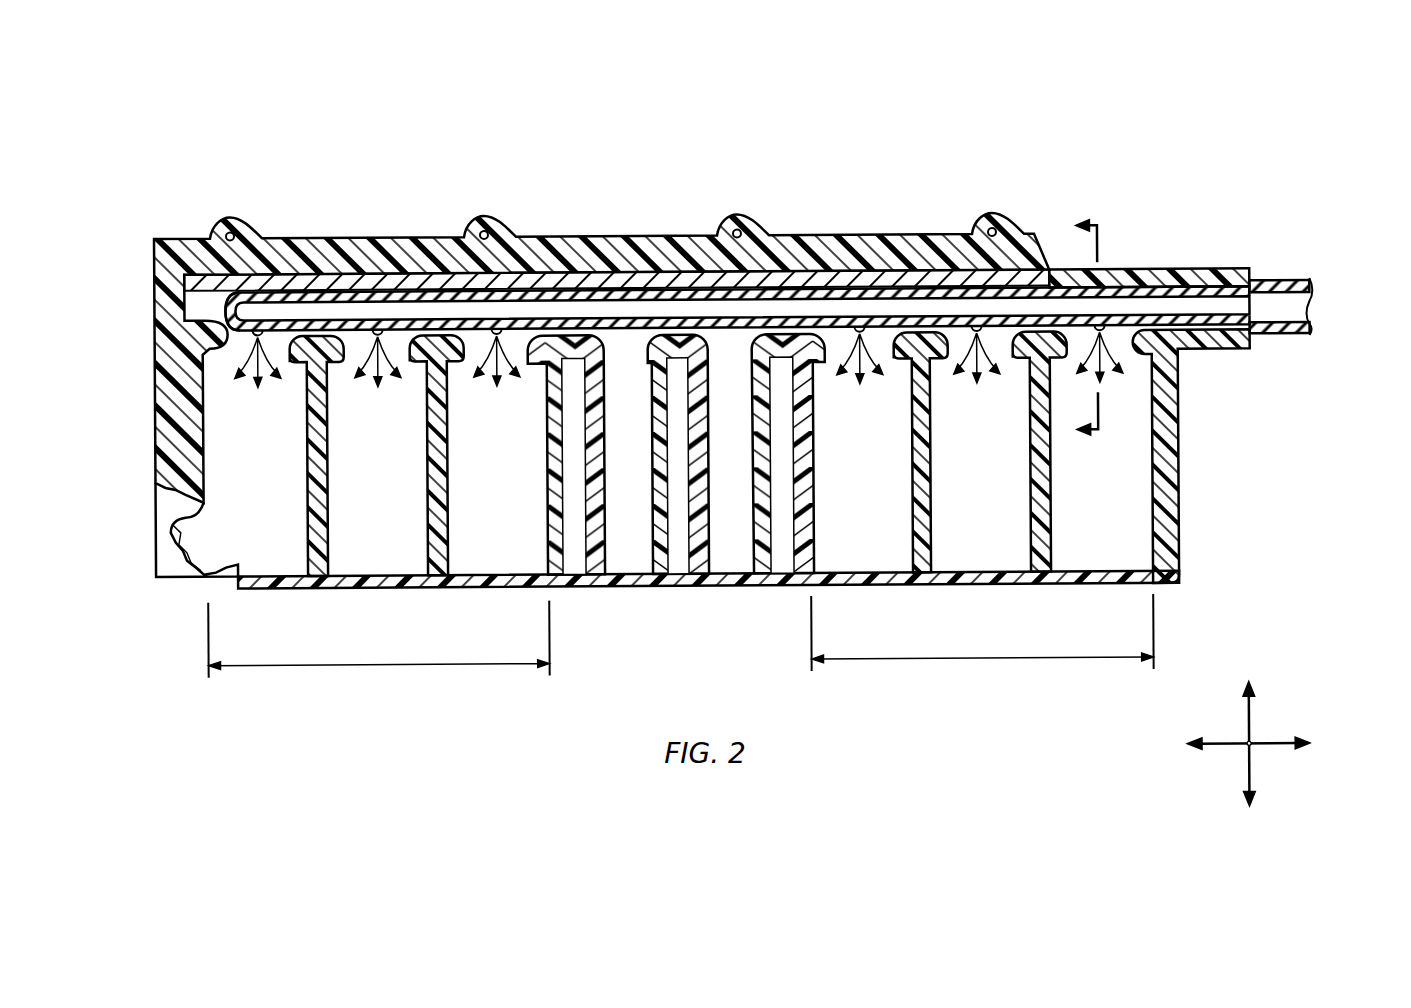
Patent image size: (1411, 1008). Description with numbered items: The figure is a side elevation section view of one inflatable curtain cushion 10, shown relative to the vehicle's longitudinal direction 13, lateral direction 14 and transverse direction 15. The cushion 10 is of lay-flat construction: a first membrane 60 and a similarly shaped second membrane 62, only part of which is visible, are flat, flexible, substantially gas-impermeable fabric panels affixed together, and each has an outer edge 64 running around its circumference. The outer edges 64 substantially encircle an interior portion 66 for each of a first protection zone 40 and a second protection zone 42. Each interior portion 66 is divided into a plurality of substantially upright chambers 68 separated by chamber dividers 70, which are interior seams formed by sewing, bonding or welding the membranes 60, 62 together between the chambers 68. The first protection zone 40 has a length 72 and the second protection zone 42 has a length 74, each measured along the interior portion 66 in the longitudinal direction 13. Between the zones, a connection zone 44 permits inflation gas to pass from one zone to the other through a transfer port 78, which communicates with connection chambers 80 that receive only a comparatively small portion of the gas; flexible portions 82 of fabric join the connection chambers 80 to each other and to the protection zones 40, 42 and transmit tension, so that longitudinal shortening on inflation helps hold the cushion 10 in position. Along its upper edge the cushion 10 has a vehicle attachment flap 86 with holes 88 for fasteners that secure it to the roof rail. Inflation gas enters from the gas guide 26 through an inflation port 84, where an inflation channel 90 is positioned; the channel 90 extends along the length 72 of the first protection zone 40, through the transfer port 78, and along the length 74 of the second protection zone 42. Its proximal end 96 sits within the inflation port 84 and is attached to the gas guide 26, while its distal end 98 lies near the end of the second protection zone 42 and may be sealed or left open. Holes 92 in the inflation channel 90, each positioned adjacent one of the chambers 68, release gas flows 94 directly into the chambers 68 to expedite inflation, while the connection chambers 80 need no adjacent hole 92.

The cushion 10 is at (683, 140).
The longitudinal direction 13 is at (1276, 750).
The lateral direction 14 is at (1245, 750).
The transverse direction 15 is at (1250, 716).
The gas guide 26 is at (1295, 284).
The first protection zone 40 is at (988, 606).
The second protection zone 42 is at (378, 606).
The connection zone 44 is at (657, 626).
The first membrane 60 is at (340, 255).
The second membrane 62 is at (180, 575).
The outer edge 64 is at (605, 272).
The interior portion 66 is at (362, 531).
The chamber 68 is at (245, 471).
The chamber divider 70 is at (327, 490).
The length of first protection zone 72 is at (975, 661).
The length of second protection zone 74 is at (370, 664).
The transfer port 78 is at (665, 300).
The connection chamber 80 is at (617, 421).
The flexible portion 82 is at (580, 587).
The inflation port 84 is at (1185, 272).
The vehicle attachment flap 86 is at (790, 272).
The hole 88 is at (228, 231).
The inflation channel 90 is at (1150, 290).
The hole 92 is at (258, 325).
The fluid flow 94 is at (252, 362).
The proximal end 96 is at (1235, 300).
The distal end 98 is at (230, 322).